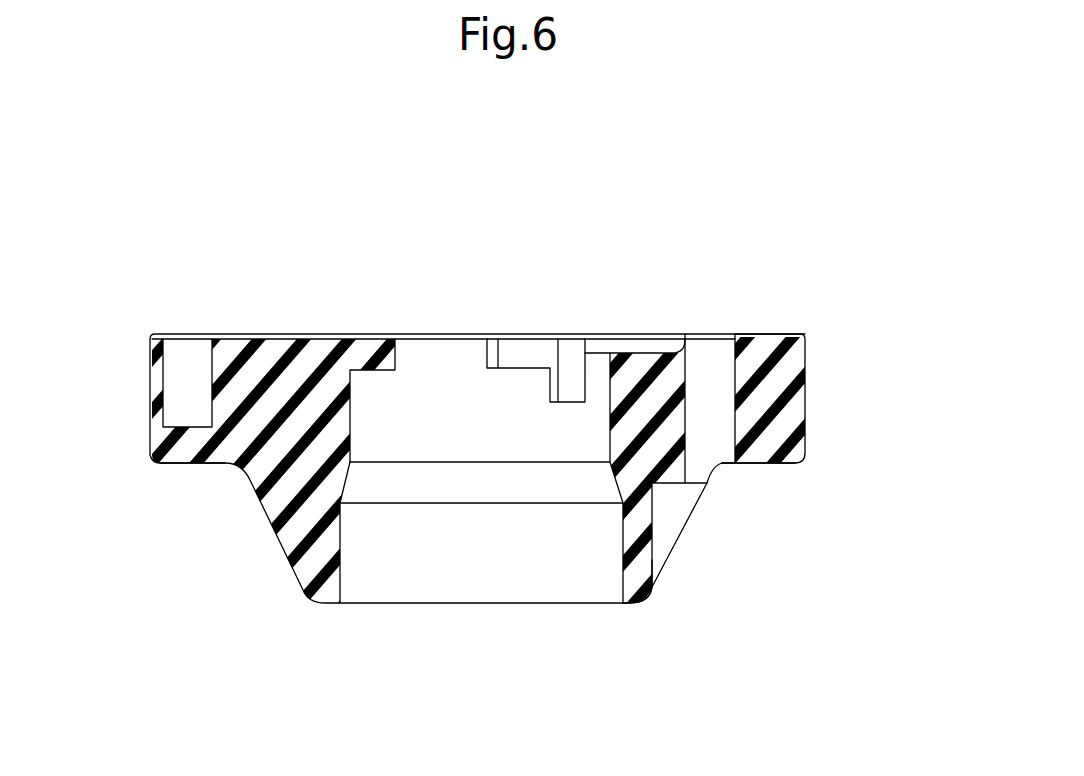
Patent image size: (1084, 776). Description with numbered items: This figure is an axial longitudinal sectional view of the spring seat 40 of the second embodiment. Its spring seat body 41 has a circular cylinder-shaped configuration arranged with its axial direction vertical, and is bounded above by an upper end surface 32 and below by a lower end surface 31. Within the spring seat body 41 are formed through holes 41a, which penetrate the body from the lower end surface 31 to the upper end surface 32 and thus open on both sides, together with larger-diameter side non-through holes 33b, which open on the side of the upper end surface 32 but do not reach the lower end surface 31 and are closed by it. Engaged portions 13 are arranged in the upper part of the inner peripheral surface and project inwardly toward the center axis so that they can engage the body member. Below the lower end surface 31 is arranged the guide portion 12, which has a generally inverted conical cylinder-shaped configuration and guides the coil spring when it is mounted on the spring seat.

The spring seat 40 is at (765, 273).
The spring seat body 41 is at (788, 382).
The through holes 41a is at (686, 352).
The upper end surface 32 is at (779, 334).
The lower end surface 31 is at (213, 465).
The larger-diameter side non-through holes 33b is at (177, 343).
The engaged portions 13 is at (378, 347).
The guide portion 12 is at (643, 577).